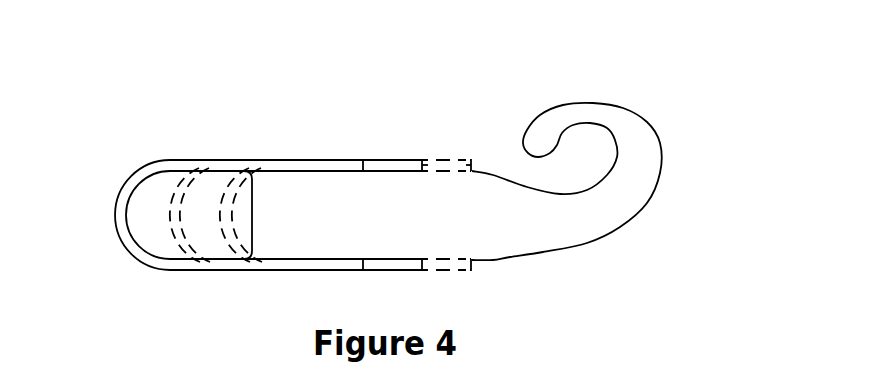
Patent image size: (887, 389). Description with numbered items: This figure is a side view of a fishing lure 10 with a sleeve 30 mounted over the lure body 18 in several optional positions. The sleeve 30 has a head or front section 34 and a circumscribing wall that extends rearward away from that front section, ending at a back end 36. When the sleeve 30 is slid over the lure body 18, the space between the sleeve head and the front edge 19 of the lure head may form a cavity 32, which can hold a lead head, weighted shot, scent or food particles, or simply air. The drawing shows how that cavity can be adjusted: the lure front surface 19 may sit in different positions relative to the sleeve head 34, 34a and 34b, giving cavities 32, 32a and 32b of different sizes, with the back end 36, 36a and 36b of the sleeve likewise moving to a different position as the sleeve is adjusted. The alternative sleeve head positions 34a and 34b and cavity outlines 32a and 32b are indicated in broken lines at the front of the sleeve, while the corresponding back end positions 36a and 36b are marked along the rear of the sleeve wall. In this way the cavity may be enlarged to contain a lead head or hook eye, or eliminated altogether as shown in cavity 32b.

The fishing lure 10 is at (690, 66).
The lure shank (body) 18 is at (438, 228).
The front edge of the lure head 19 is at (253, 217).
The sleeve 30 is at (107, 131).
The cavity 32 is at (160, 187).
The cavity 32a is at (215, 193).
The cavity 32b is at (245, 192).
The sleeve head or front section 34 is at (115, 220).
The sleeve head 34a is at (178, 212).
The sleeve head 34b is at (230, 212).
The back end of the sleeve 36 is at (377, 165).
The back end of the sleeve 36a is at (430, 165).
The back end of the sleeve 36b is at (472, 165).